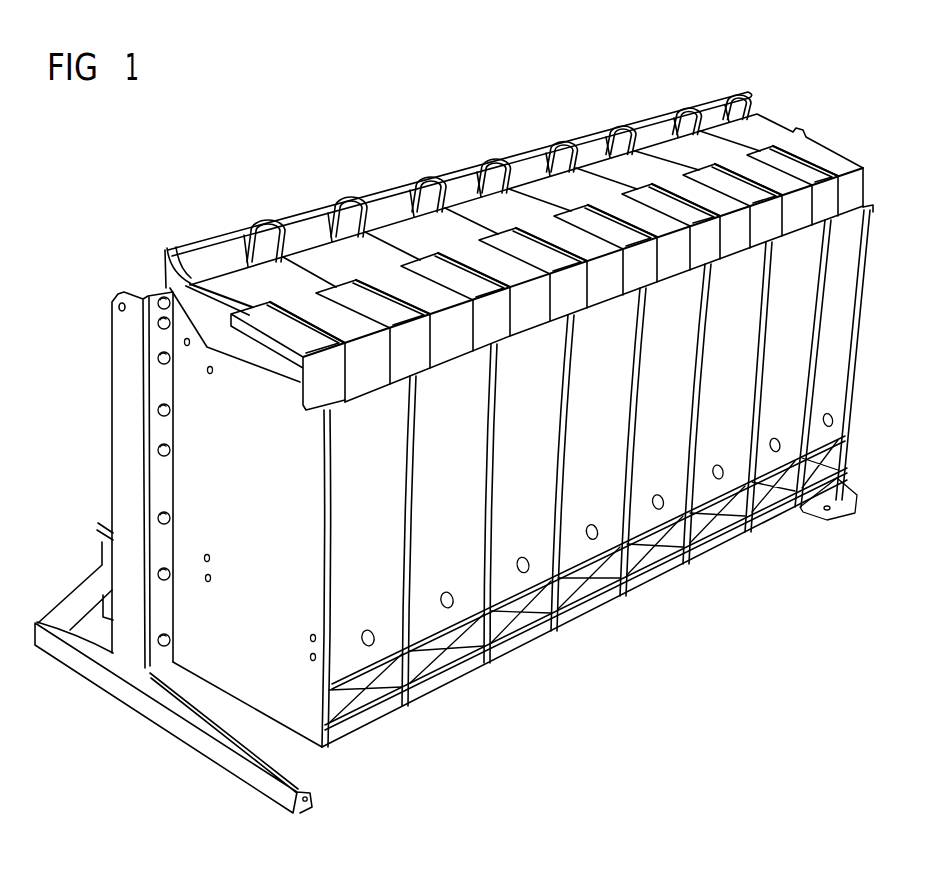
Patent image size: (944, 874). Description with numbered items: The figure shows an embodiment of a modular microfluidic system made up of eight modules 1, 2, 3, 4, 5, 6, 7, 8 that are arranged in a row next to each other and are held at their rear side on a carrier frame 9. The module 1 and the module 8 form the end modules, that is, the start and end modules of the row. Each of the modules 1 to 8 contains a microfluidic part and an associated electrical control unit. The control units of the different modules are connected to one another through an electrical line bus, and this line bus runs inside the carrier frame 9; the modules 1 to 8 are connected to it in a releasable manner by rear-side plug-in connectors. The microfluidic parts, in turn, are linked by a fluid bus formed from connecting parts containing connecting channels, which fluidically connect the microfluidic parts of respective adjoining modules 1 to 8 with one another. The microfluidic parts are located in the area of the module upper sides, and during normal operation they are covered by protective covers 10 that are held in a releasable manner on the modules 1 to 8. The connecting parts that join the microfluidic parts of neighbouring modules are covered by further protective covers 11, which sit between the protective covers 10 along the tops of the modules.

The module 1 is at (362, 658).
The module 2 is at (428, 620).
The module 3 is at (505, 588).
The module 4 is at (577, 553).
The module 5 is at (641, 522).
The module 6 is at (704, 492).
The module 7 is at (765, 461).
The module 8 is at (843, 417).
The carrier frame 9 is at (128, 403).
The protective cover 10 is at (433, 287).
The further protective cover 11 is at (377, 300).